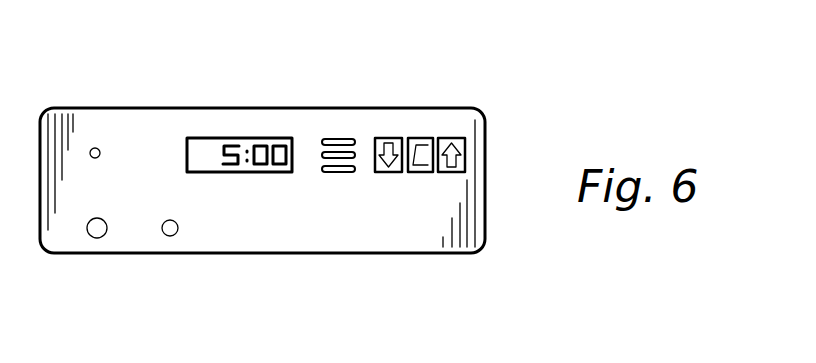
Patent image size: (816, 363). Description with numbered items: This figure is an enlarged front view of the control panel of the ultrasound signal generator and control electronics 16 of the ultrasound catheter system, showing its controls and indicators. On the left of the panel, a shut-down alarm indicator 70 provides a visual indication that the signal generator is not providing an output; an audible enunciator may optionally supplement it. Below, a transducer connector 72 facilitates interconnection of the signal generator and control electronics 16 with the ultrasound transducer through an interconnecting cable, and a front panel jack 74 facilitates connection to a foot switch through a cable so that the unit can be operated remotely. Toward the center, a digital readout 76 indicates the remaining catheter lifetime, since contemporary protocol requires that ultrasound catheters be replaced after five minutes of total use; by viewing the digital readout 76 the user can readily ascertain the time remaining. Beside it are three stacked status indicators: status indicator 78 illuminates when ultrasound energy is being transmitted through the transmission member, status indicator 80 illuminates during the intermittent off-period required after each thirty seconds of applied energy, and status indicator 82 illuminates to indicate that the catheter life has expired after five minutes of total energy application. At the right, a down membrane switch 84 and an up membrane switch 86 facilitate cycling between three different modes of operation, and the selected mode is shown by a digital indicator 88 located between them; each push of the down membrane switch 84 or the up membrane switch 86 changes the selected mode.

The signal generator and control electronics 16 is at (130, 92).
The shut-down alarm indicator 70 is at (94, 148).
The transducer connector 72 is at (103, 236).
The front panel jack 74 is at (176, 235).
The digital readout 76 is at (187, 138).
The status indicator 78 is at (350, 139).
The status indicator 80 is at (322, 155).
The status indicator 82 is at (350, 172).
The down membrane switch 84 is at (396, 138).
The up membrane switch 86 is at (465, 158).
The digital indicator 88 is at (425, 172).